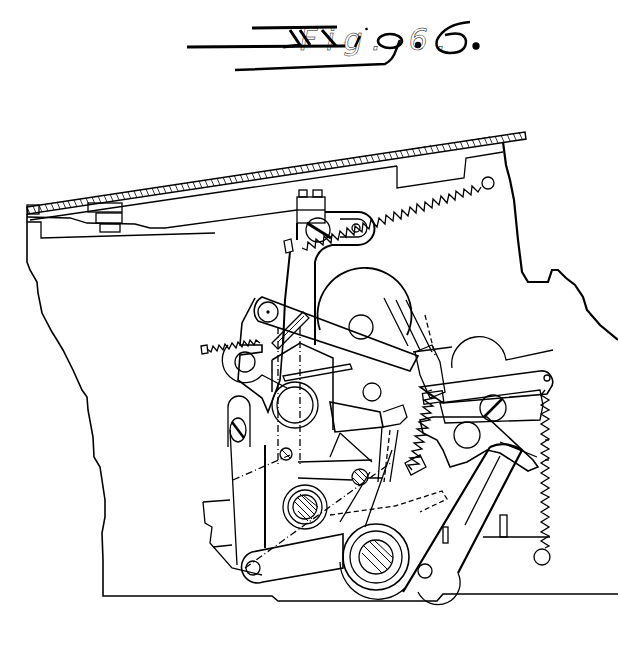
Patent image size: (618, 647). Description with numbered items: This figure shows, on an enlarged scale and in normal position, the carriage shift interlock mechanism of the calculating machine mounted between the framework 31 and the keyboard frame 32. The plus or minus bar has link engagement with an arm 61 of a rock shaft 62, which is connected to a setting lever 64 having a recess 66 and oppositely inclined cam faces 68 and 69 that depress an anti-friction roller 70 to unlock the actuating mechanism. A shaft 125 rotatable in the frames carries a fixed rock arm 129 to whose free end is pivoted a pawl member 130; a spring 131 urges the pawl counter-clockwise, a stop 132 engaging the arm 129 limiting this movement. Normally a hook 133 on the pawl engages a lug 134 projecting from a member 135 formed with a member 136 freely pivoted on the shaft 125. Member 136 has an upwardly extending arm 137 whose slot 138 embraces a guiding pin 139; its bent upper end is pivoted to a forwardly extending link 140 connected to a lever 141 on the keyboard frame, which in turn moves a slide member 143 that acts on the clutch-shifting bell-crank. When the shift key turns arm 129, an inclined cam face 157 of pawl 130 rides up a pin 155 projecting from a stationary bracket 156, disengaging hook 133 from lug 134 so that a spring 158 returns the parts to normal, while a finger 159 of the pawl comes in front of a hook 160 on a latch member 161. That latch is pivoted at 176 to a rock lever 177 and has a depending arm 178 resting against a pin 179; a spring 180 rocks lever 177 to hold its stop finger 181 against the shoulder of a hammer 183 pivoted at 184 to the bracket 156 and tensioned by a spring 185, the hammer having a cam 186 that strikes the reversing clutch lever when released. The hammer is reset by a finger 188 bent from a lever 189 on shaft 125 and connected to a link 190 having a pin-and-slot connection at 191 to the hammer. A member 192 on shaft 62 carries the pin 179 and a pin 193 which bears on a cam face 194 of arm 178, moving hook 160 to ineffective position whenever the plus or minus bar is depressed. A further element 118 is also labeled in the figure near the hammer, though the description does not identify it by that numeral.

The framework 31 is at (322, 371).
The keyboard frame 32 is at (300, 160).
The arm 61 is at (392, 454).
The rock shaft 62 is at (300, 505).
The setting lever 64 is at (230, 548).
The recess 66 is at (455, 495).
The cam face 68 is at (340, 318).
The cam face 69 is at (412, 340).
The anti-friction roller 70 is at (363, 322).
The bar 118 is at (320, 390).
The shaft 125 is at (372, 570).
The rock arm 129 is at (442, 532).
The pawl member 130 is at (552, 430).
The spring 131 is at (445, 395).
The stop 132 is at (418, 474).
The hook 133 is at (552, 462).
The lug 134 is at (552, 447).
The member 135 is at (500, 490).
The member 136 is at (415, 588).
The arm 137 is at (298, 288).
The slot 138 is at (340, 216).
The pin 139 is at (306, 229).
The link 140 is at (205, 228).
The lever 141 is at (105, 203).
The slide member 143 is at (35, 207).
The pin 155 is at (375, 362).
The stationary bracket 156 is at (448, 352).
The cam face 157 is at (434, 390).
The spring 158 is at (440, 202).
The finger 159 is at (420, 360).
The hook 160 is at (408, 345).
The member 161 is at (395, 325).
The pivot 176 is at (268, 306).
The rock lever 177 is at (245, 330).
The depending arm 178 is at (365, 406).
The pin 179 is at (235, 479).
The spring 180 is at (212, 346).
The stop finger 181 is at (245, 364).
The hammer 183 is at (356, 417).
The pivot 184 is at (270, 415).
The spring 185 is at (552, 415).
The cam 186 is at (400, 408).
The finger 188 is at (503, 540).
The lever 189 is at (280, 582).
The link 190 is at (242, 522).
The pin-and-slot connection 191 is at (230, 432).
The member 192 is at (316, 572).
The pin 193 is at (352, 476).
The cam face 194 is at (340, 432).